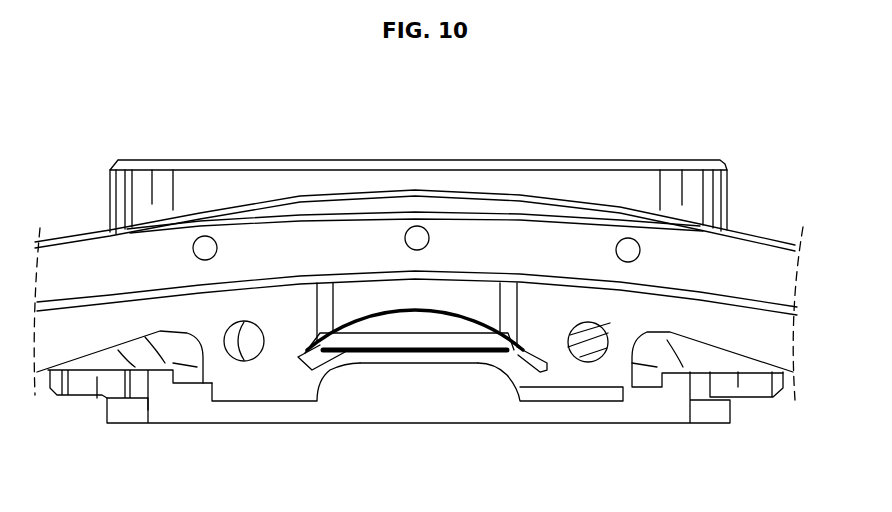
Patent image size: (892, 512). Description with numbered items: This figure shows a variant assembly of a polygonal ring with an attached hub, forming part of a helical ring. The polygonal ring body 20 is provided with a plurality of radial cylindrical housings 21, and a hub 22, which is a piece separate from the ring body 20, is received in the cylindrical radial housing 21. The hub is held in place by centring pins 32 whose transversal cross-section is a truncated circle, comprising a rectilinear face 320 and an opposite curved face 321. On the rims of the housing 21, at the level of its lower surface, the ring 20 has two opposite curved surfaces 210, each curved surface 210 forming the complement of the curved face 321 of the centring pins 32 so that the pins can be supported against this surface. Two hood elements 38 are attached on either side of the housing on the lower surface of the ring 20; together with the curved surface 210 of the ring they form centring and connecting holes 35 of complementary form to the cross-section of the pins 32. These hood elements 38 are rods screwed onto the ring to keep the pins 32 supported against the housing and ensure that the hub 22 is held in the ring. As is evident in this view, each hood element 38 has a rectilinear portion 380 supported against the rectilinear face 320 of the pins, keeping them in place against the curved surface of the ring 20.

The polygonal ring body 20 is at (108, 323).
The radial cylindrical housing 21 is at (392, 293).
The curved surface 210 is at (358, 319).
The hub 22 is at (163, 405).
The centring pin 32 is at (397, 343).
The rectilinear face 320 is at (458, 354).
The curved face 321 is at (477, 319).
The centring and connecting hole 35 is at (442, 334).
The hood element 38 is at (283, 395).
The rectilinear portion 380 is at (367, 367).